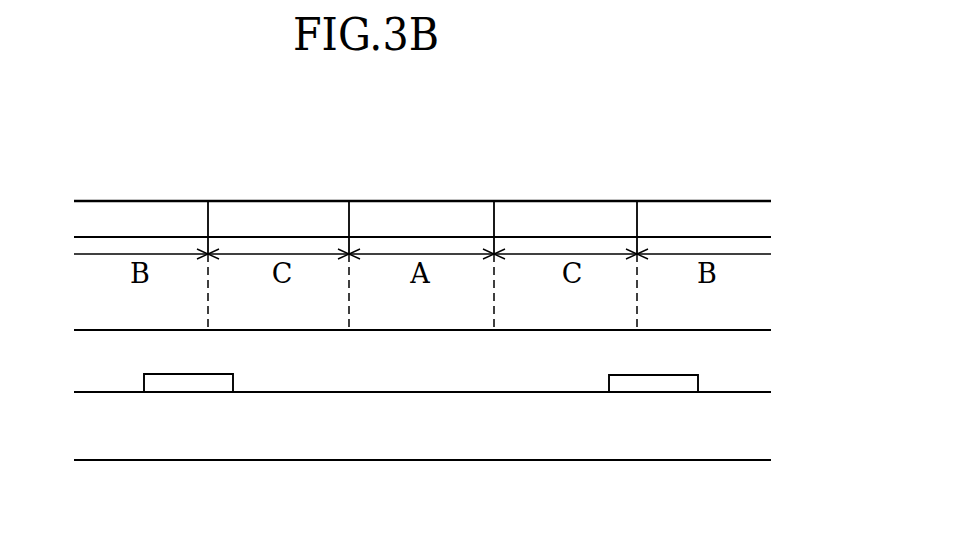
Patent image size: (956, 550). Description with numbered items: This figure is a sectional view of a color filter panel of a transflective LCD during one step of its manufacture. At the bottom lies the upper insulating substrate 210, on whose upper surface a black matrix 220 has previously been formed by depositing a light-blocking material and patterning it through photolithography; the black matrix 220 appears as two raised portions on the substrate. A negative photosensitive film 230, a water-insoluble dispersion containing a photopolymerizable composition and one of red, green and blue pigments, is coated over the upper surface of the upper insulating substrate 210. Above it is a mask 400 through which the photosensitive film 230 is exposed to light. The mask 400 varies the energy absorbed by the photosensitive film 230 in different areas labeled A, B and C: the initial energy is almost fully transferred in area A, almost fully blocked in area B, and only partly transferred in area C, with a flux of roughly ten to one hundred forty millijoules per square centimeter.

The mask 400 is at (349, 197).
The negative photosensitive film 230 is at (389, 372).
The black matrix 220 is at (185, 380).
The upper insulating substrate 210 is at (547, 435).